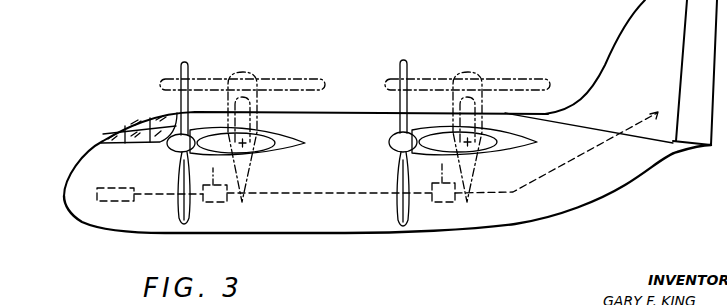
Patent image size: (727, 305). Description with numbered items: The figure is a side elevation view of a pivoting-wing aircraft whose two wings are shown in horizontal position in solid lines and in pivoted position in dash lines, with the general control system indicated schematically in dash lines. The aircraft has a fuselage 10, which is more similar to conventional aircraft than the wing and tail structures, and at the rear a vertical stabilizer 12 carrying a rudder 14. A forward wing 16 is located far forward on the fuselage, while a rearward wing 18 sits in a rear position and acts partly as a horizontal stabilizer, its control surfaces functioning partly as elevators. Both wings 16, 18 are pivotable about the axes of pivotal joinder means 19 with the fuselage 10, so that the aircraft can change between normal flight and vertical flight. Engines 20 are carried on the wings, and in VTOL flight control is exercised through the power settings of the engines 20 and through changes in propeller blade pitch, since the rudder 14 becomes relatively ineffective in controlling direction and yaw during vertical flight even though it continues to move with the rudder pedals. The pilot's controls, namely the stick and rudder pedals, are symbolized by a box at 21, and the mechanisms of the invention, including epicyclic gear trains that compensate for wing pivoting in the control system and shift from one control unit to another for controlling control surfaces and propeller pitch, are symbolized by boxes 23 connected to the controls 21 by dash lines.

The fuselage 10 is at (310, 219).
The vertical stabilizer 12 is at (648, 85).
The rudder 14 is at (705, 85).
The forward wing 16 is at (210, 146).
The rearward wing 18 is at (403, 152).
The pivotal joinder means 19 is at (244, 143).
The engines 20 is at (188, 114).
The aircraft controls 21 is at (113, 188).
The control mechanism boxes 23 is at (215, 202).